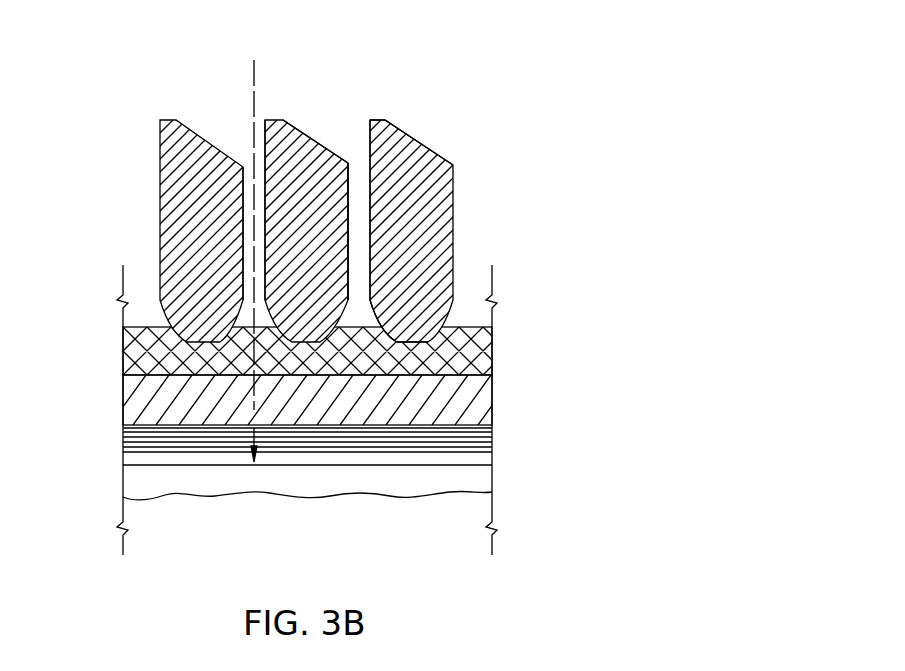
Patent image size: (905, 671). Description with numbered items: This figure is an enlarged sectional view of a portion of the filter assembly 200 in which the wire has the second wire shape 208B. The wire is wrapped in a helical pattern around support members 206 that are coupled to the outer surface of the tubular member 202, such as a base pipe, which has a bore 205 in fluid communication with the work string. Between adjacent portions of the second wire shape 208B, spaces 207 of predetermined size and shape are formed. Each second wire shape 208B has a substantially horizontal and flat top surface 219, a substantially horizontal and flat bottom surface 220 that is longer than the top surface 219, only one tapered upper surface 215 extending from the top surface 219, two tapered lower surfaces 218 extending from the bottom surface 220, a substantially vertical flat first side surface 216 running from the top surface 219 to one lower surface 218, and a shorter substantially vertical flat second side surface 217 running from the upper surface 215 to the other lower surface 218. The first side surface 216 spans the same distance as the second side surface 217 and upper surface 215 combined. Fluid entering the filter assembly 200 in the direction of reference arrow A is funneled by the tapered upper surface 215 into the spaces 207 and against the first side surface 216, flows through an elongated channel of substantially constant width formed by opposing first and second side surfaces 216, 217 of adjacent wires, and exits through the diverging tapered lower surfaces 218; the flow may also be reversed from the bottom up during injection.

The filter assembly 200 is at (333, 284).
The tubular member 202 is at (132, 412).
The bore 205 is at (132, 481).
The support members 206 is at (132, 348).
The spaces 207 is at (260, 133).
The second wire shape 208B is at (160, 192).
The upper surface 215 is at (290, 121).
The first side surface 216 is at (372, 158).
The second side surface 217 is at (348, 235).
The lower surfaces 218 is at (345, 322).
The top surface 219 is at (373, 118).
The bottom surface 220 is at (410, 342).
The reference arrow A is at (252, 99).